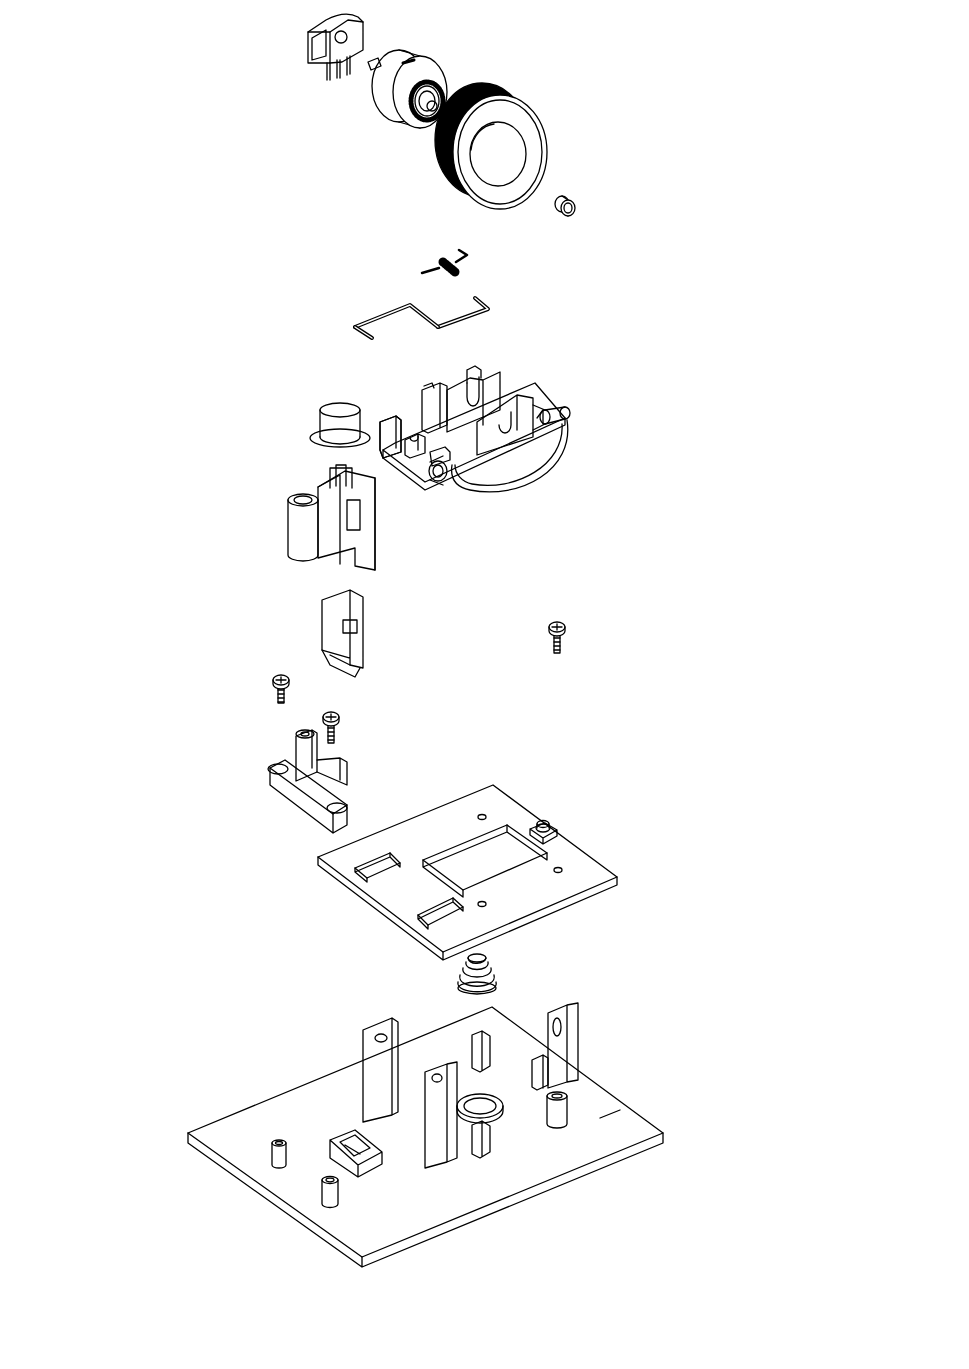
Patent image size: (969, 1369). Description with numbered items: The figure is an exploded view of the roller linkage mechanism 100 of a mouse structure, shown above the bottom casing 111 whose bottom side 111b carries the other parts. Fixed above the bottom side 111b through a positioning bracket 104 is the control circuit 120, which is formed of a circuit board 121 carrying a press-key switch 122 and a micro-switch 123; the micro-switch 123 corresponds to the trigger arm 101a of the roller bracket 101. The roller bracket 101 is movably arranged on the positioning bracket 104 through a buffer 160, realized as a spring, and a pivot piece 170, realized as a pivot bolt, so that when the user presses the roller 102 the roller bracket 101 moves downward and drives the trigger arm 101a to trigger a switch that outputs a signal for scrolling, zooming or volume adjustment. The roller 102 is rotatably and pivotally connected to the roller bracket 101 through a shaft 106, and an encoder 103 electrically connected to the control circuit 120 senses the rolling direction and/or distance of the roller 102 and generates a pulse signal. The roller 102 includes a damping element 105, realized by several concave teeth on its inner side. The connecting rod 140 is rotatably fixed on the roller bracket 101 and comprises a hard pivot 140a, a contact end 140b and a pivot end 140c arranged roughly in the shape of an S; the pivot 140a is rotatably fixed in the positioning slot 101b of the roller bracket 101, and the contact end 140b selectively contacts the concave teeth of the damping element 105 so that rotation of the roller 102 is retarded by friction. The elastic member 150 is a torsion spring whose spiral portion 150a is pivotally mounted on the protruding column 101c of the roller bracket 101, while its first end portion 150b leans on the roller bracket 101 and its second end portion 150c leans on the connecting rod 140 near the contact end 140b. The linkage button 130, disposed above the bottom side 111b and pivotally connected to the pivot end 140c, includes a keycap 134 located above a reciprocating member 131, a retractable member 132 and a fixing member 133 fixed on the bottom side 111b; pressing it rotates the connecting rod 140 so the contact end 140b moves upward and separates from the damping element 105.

The roller linkage mechanism 100 is at (85, 20).
The roller bracket 101 is at (683, 366).
The trigger arm 101a is at (545, 447).
The positioning slot 101b is at (411, 414).
The protruding column 101c is at (457, 465).
The roller 102 is at (430, 167).
The encoder 103 is at (306, 45).
The positioning bracket 104 is at (363, 1052).
The damping element 105 is at (440, 112).
The shaft 106 is at (377, 101).
The bottom casing 111 is at (663, 1140).
The bottom side 111b is at (612, 1123).
The control circuit 120 is at (718, 806).
The circuit board 121 is at (588, 852).
The press-key switch 122 is at (487, 910).
The micro-switch 123 is at (557, 830).
The linkage button 130 is at (127, 521).
The reciprocating member 131 is at (288, 528).
The retractable member 132 is at (320, 620).
The fixing member 133 is at (293, 753).
The keycap 134 is at (312, 425).
The connecting rod 140 is at (240, 276).
The pivot 140a is at (428, 319).
The contact end 140b is at (473, 302).
The pivot end 140c is at (365, 337).
The elastic member 150 is at (590, 236).
The spiral portion 150a is at (457, 277).
The first end portion 150b is at (428, 277).
The second end portion 150c is at (463, 246).
The buffer 160 is at (463, 972).
The pivot piece 170 is at (440, 480).